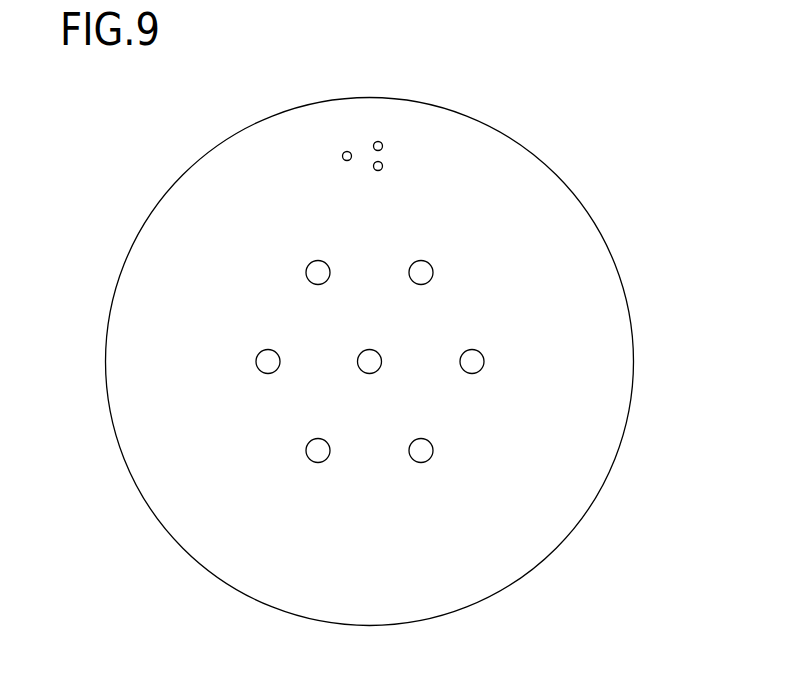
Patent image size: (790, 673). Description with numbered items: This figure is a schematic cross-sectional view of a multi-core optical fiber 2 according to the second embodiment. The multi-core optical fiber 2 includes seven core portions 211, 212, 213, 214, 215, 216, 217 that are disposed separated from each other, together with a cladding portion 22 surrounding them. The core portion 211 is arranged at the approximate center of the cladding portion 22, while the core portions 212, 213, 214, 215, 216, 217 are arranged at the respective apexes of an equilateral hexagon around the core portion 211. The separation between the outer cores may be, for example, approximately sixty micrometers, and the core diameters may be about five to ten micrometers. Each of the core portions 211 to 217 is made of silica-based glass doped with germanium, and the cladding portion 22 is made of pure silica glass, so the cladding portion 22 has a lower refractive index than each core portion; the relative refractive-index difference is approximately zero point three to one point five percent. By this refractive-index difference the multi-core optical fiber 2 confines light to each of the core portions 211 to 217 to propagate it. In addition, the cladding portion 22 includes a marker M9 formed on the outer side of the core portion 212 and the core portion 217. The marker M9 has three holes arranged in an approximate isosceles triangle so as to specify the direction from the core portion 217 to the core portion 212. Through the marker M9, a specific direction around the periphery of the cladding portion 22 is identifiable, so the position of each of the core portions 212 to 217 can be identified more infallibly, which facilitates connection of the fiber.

The multi-core optical fiber 2 is at (577, 128).
The cladding portion 22 is at (580, 494).
The marker M9 is at (357, 136).
The core portion 211 is at (370, 350).
The core portion 212 is at (421, 260).
The core portion 213 is at (484, 360).
The core portion 214 is at (430, 459).
The core portion 215 is at (310, 459).
The core portion 216 is at (256, 362).
The core portion 217 is at (317, 260).